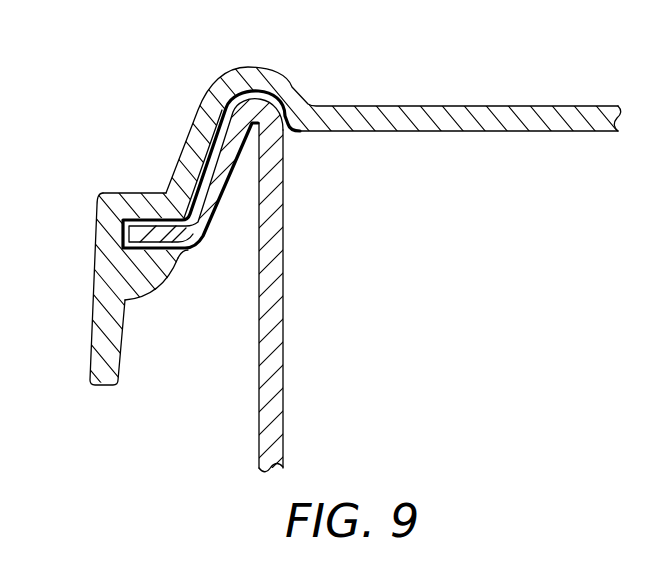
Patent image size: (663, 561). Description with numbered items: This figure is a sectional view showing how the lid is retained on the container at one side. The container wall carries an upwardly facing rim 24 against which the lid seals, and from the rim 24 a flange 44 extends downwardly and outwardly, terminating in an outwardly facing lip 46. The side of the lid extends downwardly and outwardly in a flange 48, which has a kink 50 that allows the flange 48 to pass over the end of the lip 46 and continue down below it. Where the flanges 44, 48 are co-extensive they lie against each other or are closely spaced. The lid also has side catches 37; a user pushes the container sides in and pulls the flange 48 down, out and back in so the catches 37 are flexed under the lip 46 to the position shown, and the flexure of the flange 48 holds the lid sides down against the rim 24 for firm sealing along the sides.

The rim 24 is at (256, 98).
The side catch 37 is at (145, 294).
The flange 44 is at (207, 147).
The lip 46 is at (198, 249).
The flange 48 is at (194, 120).
The kink 50 is at (150, 191).